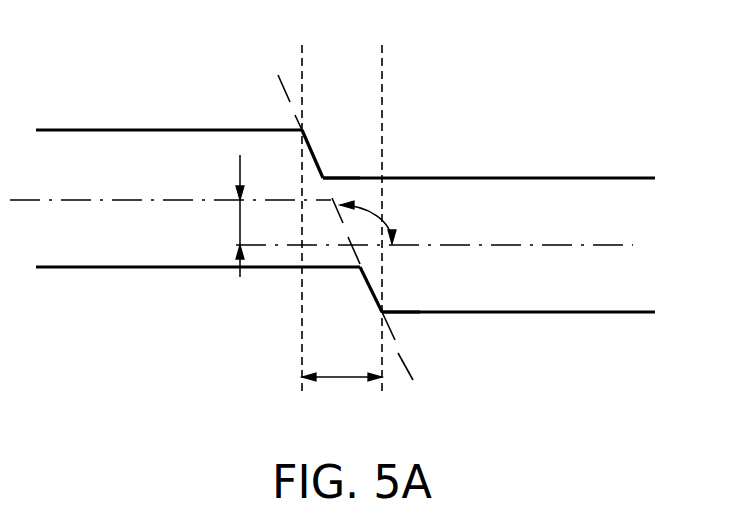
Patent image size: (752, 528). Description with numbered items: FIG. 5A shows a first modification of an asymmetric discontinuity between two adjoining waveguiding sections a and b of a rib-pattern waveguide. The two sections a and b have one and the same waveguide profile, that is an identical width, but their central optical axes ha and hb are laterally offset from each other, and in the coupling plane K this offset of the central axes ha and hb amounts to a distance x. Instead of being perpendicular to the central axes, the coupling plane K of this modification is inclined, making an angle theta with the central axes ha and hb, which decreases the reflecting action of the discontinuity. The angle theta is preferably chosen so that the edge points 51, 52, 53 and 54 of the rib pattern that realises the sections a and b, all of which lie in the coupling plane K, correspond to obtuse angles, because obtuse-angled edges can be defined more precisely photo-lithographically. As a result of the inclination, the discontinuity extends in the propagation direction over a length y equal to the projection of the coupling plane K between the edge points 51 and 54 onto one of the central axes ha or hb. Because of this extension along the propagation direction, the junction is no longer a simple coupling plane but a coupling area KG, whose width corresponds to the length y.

The edge point 51 is at (304, 131).
The edge point 52 is at (326, 177).
The edge point 53 is at (357, 270).
The edge point 54 is at (380, 312).
The coupling plane K is at (283, 90).
The coupling area KG is at (380, 50).
The waveguiding section a is at (137, 245).
The waveguiding section b is at (583, 293).
The central axis ha is at (200, 200).
The central axis hb is at (545, 247).
The offset distance x is at (231, 213).
The discontinuity length y is at (342, 361).
The angle theta is at (350, 205).